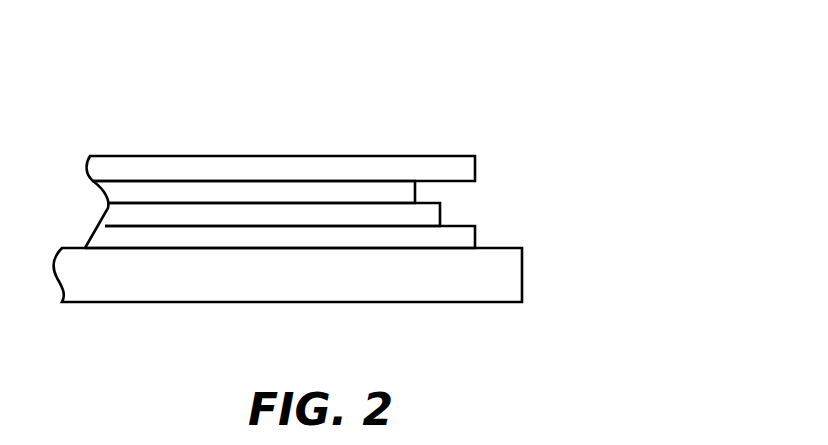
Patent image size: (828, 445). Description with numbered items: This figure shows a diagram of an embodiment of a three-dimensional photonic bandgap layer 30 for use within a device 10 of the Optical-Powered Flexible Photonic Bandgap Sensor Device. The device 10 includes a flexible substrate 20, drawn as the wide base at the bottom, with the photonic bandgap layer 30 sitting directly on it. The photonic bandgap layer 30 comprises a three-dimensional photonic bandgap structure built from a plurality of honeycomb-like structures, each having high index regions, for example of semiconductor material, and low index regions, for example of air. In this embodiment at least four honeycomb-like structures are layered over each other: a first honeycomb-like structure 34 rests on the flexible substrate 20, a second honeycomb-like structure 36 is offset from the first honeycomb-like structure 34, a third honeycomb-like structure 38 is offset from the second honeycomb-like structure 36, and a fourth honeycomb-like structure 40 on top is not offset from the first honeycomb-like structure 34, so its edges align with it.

The device 10 is at (500, 102).
The flexible substrate 20 is at (508, 285).
The photonic bandgap layer 30 is at (595, 155).
The first honeycomb-like structure 34 is at (462, 236).
The second honeycomb-like structure 36 is at (425, 213).
The third honeycomb-like structure 38 is at (403, 188).
The fourth honeycomb-like structure 40 is at (462, 168).